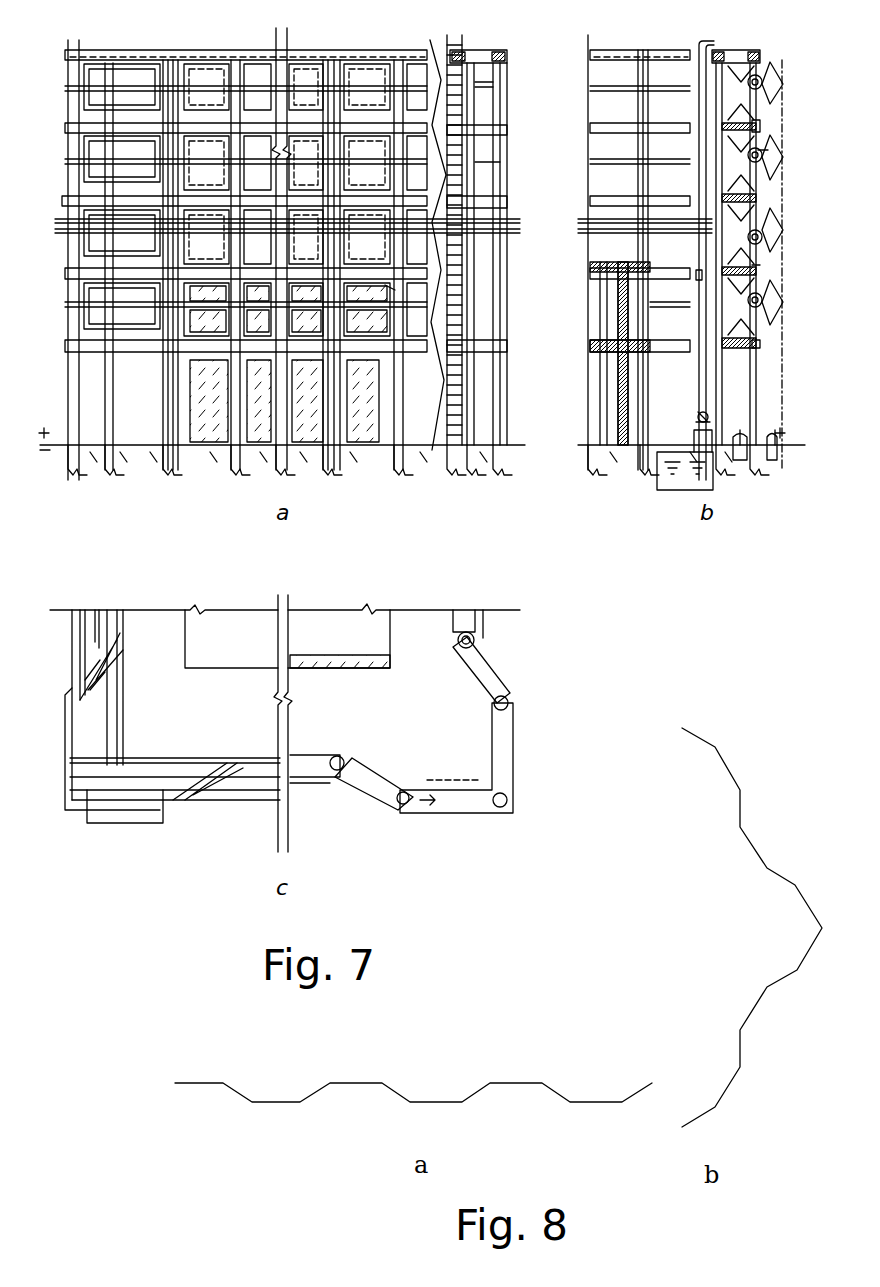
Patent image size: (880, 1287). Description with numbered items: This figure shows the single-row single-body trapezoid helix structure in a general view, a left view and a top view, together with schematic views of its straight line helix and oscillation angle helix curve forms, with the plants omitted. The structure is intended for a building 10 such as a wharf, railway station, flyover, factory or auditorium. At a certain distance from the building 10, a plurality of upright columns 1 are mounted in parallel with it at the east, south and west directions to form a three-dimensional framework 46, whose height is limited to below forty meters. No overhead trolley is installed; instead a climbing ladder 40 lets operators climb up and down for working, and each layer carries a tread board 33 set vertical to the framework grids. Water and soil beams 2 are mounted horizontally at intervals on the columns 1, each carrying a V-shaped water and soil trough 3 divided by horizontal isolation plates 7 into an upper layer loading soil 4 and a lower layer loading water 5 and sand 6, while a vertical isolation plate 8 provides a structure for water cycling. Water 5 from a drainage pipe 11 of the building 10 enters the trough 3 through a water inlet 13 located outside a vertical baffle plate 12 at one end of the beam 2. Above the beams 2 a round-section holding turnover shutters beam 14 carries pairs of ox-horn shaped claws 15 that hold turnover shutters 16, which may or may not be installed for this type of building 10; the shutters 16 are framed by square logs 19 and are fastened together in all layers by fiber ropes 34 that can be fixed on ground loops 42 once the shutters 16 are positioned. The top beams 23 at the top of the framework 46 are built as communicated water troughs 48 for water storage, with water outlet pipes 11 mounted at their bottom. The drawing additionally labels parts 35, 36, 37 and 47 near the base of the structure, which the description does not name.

In FIG. 7, the upright columns 1 is at (645, 450).
In FIG. 7, the water and soil beams 2 is at (72, 123).
In FIG. 7, the water and soil trough 3 is at (505, 125).
In FIG. 7, the soil 4 is at (760, 270).
In FIG. 7, the water 5 is at (690, 455).
In FIG. 7, the sand 6 is at (760, 343).
In FIG. 7, the horizontal isolation plates 7 is at (760, 128).
In FIG. 7, the vertical isolation plate 8 is at (770, 150).
In FIG. 7, the building 10 is at (200, 385).
In FIG. 7, the drainage pipe 11 is at (170, 70).
In FIG. 7, the vertical baffle plate 12 is at (387, 285).
In FIG. 7, the water inlet 13 is at (468, 636).
In FIG. 7, the holding turnover shutters beam 14 is at (80, 86).
In FIG. 7, the ox-horn shaped claws 15 is at (755, 75).
In FIG. 7, the turnover shutters 16 is at (160, 60).
In FIG. 7, the square logs 19 is at (622, 410).
In FIG. 7, the top beam 23 is at (160, 50).
In FIG. 8, the top beam 23 is at (470, 1095).
In FIG. 7, the tread board 33 is at (735, 195).
In FIG. 7, the fiber ropes 34 is at (775, 437).
In FIG. 7, the pipe 35 is at (712, 42).
In FIG. 7, the fitting 36 is at (699, 275).
In FIG. 7, the pump 37 is at (700, 412).
In FIG. 7, the climbing ladder 40 is at (447, 60).
In FIG. 7, the ground loops 42 is at (745, 455).
In FIG. 7, the three-dimensional framework 46 is at (490, 165).
In FIG. 7, the tank 47 is at (668, 452).
In FIG. 7, the communicated water troughs 48 is at (300, 28).